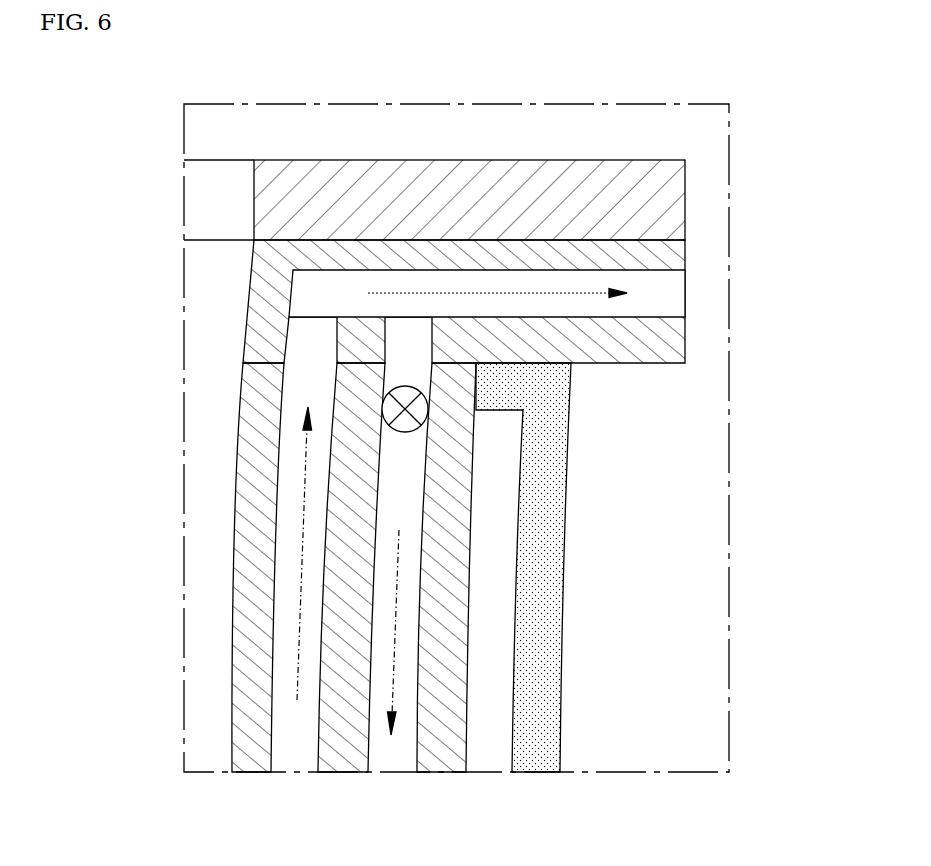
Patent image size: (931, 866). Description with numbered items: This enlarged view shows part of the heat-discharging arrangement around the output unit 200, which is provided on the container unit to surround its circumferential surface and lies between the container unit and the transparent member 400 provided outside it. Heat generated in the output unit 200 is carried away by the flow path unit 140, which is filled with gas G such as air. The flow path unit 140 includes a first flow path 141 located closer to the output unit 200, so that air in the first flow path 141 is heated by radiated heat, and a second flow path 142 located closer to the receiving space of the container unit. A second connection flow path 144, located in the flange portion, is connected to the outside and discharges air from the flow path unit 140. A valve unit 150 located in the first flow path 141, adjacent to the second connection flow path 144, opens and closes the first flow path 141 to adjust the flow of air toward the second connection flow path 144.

The flow path unit 140 is at (655, 190).
The second connection flow path 144 is at (655, 292).
The second flow path 142 is at (283, 682).
The first flow path 141 is at (412, 575).
The valve unit 150 is at (420, 432).
The transparent member 400 is at (547, 733).
The output unit 200 is at (488, 740).
The gas flow G is at (300, 514).